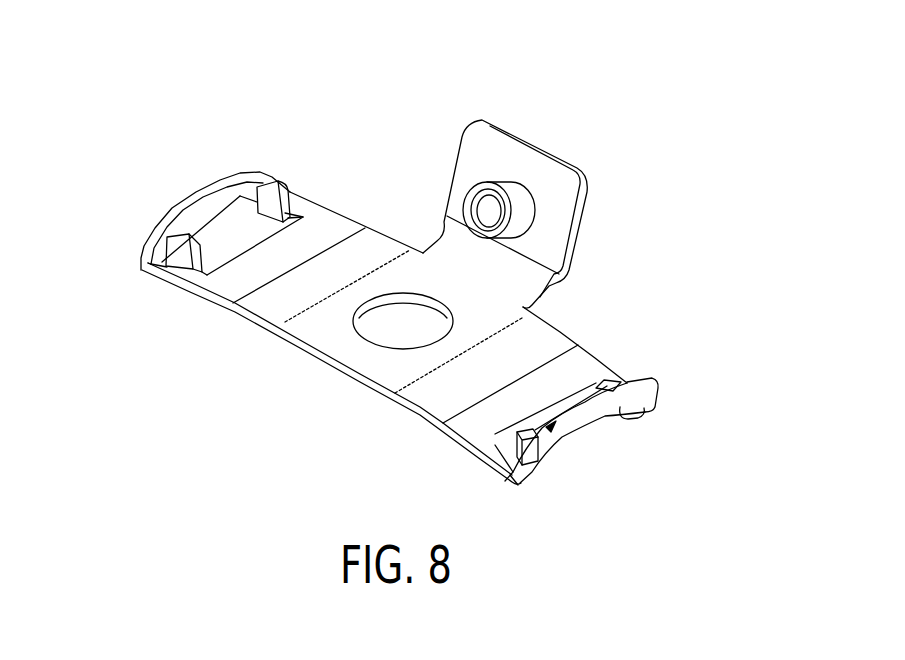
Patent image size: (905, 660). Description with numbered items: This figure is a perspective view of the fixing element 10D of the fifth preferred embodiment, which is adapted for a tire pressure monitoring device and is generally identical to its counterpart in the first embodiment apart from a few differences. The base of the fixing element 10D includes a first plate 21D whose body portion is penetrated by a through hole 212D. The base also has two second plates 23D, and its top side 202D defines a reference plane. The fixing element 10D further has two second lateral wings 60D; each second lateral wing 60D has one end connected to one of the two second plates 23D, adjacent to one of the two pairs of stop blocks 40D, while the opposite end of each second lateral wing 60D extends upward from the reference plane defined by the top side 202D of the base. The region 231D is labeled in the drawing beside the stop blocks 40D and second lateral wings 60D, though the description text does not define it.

The fixing element 10D is at (272, 108).
The first plate 21D is at (498, 313).
The second plate 23D is at (172, 272).
The stop block 40D is at (268, 190).
The second lateral wing 60D is at (190, 198).
The top side 202D is at (323, 328).
The through hole 212D is at (380, 345).
The receiving slot 231D is at (252, 252).